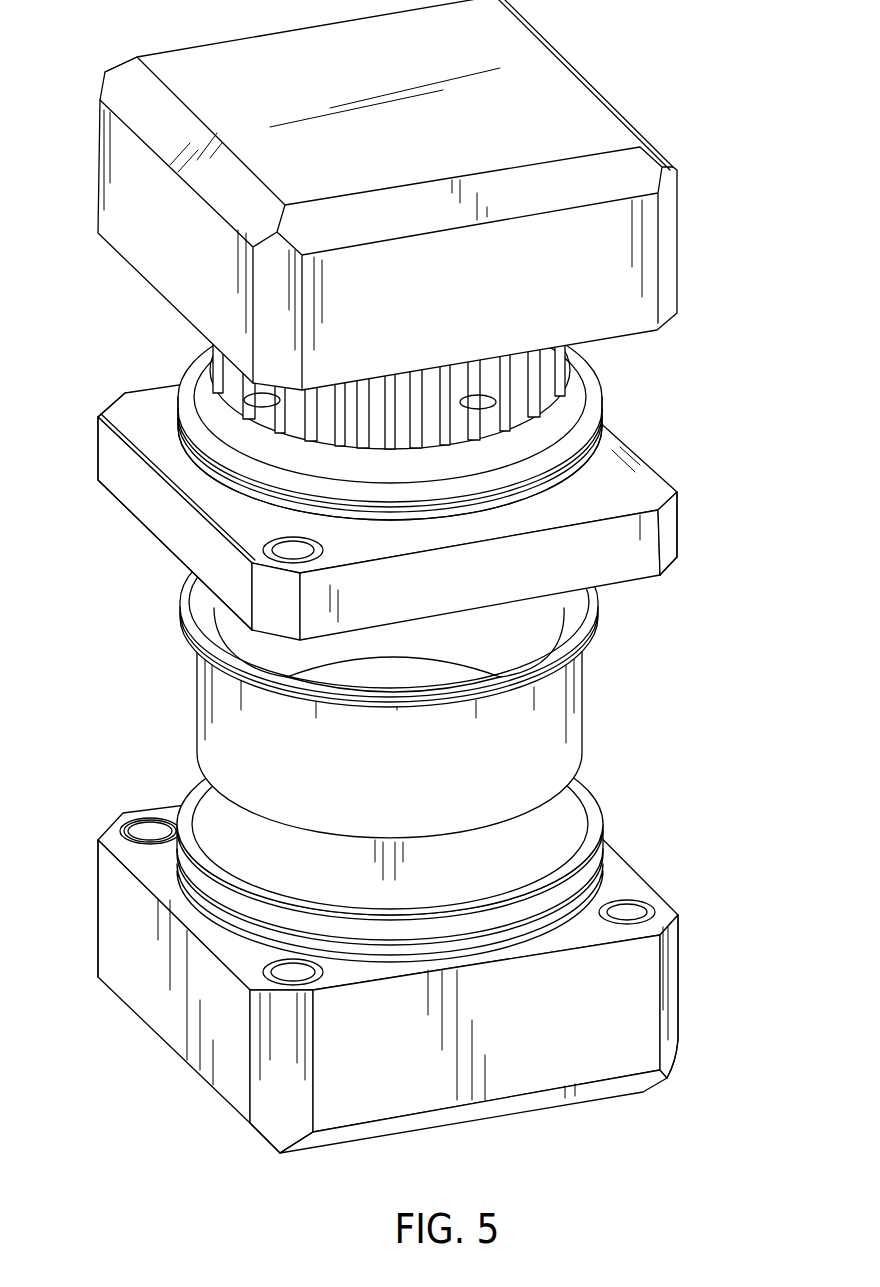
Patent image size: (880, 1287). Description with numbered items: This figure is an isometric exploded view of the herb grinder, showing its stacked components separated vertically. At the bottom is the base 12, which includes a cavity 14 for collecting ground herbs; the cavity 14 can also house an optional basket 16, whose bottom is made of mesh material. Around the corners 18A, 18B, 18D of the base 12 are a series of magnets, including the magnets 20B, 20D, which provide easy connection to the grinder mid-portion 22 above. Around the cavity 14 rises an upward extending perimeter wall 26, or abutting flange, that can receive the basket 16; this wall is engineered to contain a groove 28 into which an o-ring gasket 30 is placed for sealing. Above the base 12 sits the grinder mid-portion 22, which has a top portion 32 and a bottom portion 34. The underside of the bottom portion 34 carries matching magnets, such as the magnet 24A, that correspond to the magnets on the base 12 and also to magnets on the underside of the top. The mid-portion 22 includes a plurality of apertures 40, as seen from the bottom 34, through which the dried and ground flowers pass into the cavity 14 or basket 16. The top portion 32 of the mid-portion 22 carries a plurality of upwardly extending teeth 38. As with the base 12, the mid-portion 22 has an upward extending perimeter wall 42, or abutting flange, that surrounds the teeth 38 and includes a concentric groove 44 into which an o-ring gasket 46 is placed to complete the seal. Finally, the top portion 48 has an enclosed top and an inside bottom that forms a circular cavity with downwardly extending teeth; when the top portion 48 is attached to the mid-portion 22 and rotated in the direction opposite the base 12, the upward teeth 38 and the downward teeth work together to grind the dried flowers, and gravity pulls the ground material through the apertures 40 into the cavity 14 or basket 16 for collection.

The base 12 is at (678, 981).
The cavity 14 is at (563, 823).
The basket 16 is at (577, 699).
The corner 18A is at (272, 982).
The corner 18B is at (668, 1077).
The corner 18D is at (98, 906).
The magnet 20B is at (660, 908).
The magnet 20D is at (148, 817).
The grinder mid-portion 22 is at (670, 483).
The magnet 24A is at (262, 556).
The upward extending perimeter wall 26 is at (593, 830).
The groove 28 is at (210, 892).
The o-ring gasket 30 is at (119, 828).
The top portion 32 is at (600, 406).
The bottom portion 34 is at (677, 557).
The upwardly extending teeth 38 is at (185, 388).
The apertures 40 is at (592, 388).
The upward extending perimeter wall 42 is at (148, 428).
The concentric groove 44 is at (607, 427).
The o-ring gasket 46 is at (107, 487).
The top portion 48 is at (610, 100).